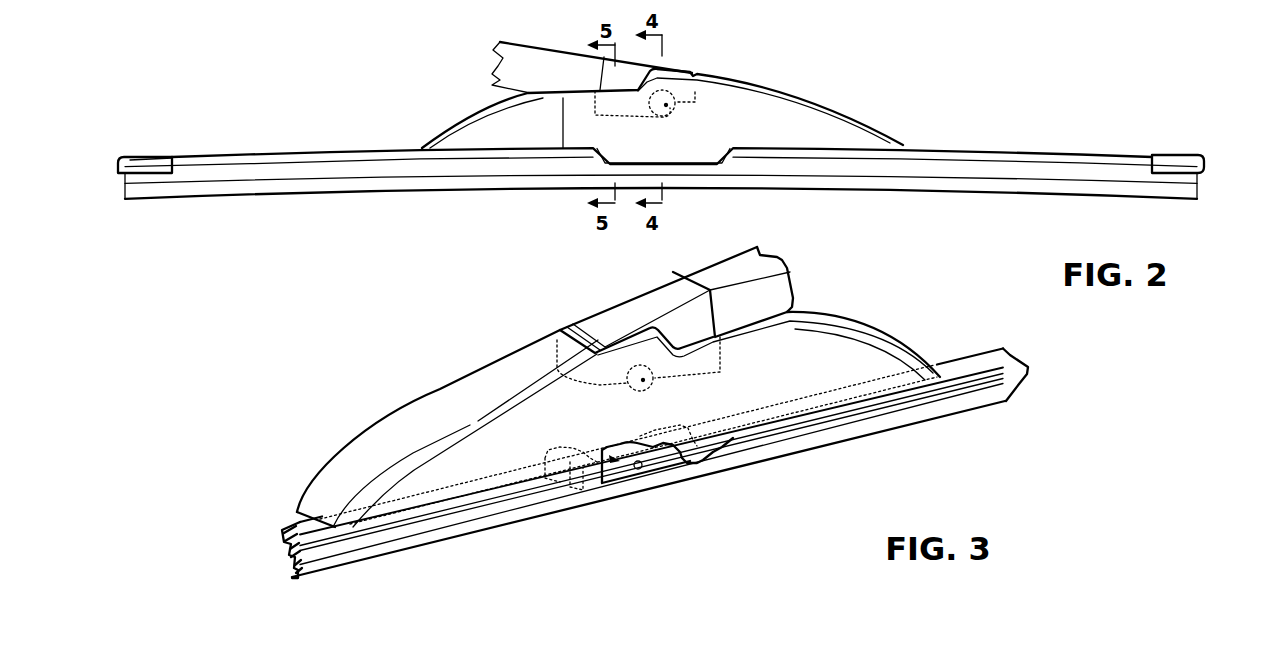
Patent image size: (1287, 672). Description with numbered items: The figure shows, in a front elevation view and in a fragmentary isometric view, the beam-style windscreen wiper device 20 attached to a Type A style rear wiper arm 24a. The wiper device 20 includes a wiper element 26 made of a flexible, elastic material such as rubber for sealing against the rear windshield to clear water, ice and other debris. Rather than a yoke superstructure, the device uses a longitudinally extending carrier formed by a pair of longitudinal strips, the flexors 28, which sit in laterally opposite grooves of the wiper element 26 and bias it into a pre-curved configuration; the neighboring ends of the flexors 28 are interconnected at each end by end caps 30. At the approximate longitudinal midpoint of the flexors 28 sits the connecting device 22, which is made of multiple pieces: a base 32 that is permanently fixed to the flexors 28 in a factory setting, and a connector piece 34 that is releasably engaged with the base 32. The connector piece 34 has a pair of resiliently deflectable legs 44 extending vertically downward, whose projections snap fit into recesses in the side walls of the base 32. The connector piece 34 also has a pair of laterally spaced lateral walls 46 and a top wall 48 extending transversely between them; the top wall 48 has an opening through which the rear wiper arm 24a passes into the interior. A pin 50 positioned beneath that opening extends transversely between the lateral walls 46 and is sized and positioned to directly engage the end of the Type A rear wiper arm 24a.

In FIG. 2, the windscreen wiper device 20 is at (878, 90).
In FIG. 3, the windscreen wiper device 20 is at (857, 296).
In FIG. 2, the connecting device 22 is at (788, 90).
In FIG. 3, the connecting device 22 is at (465, 379).
In FIG. 2, the Type A rear wiper arm 24a is at (540, 60).
In FIG. 3, the Type A rear wiper arm 24a is at (607, 315).
In FIG. 2, the wiper element 26 is at (1013, 182).
In FIG. 3, the wiper element 26 is at (835, 437).
In FIG. 2, the flexors 28 is at (1040, 157).
In FIG. 3, the flexors 28 is at (281, 532).
In FIG. 2, the end caps 30 is at (133, 163).
In FIG. 3, the base 32 is at (660, 462).
In FIG. 2, the connector piece 34 is at (489, 133).
In FIG. 3, the connector piece 34 is at (877, 363).
In FIG. 2, the legs 44 is at (705, 158).
In FIG. 3, the legs 44 is at (596, 488).
In FIG. 2, the lateral walls 46 is at (853, 142).
In FIG. 3, the lateral walls 46 is at (470, 467).
In FIG. 3, the top wall 48 is at (365, 457).
In FIG. 2, the pin 50 is at (668, 107).
In FIG. 3, the pin 50 is at (625, 400).